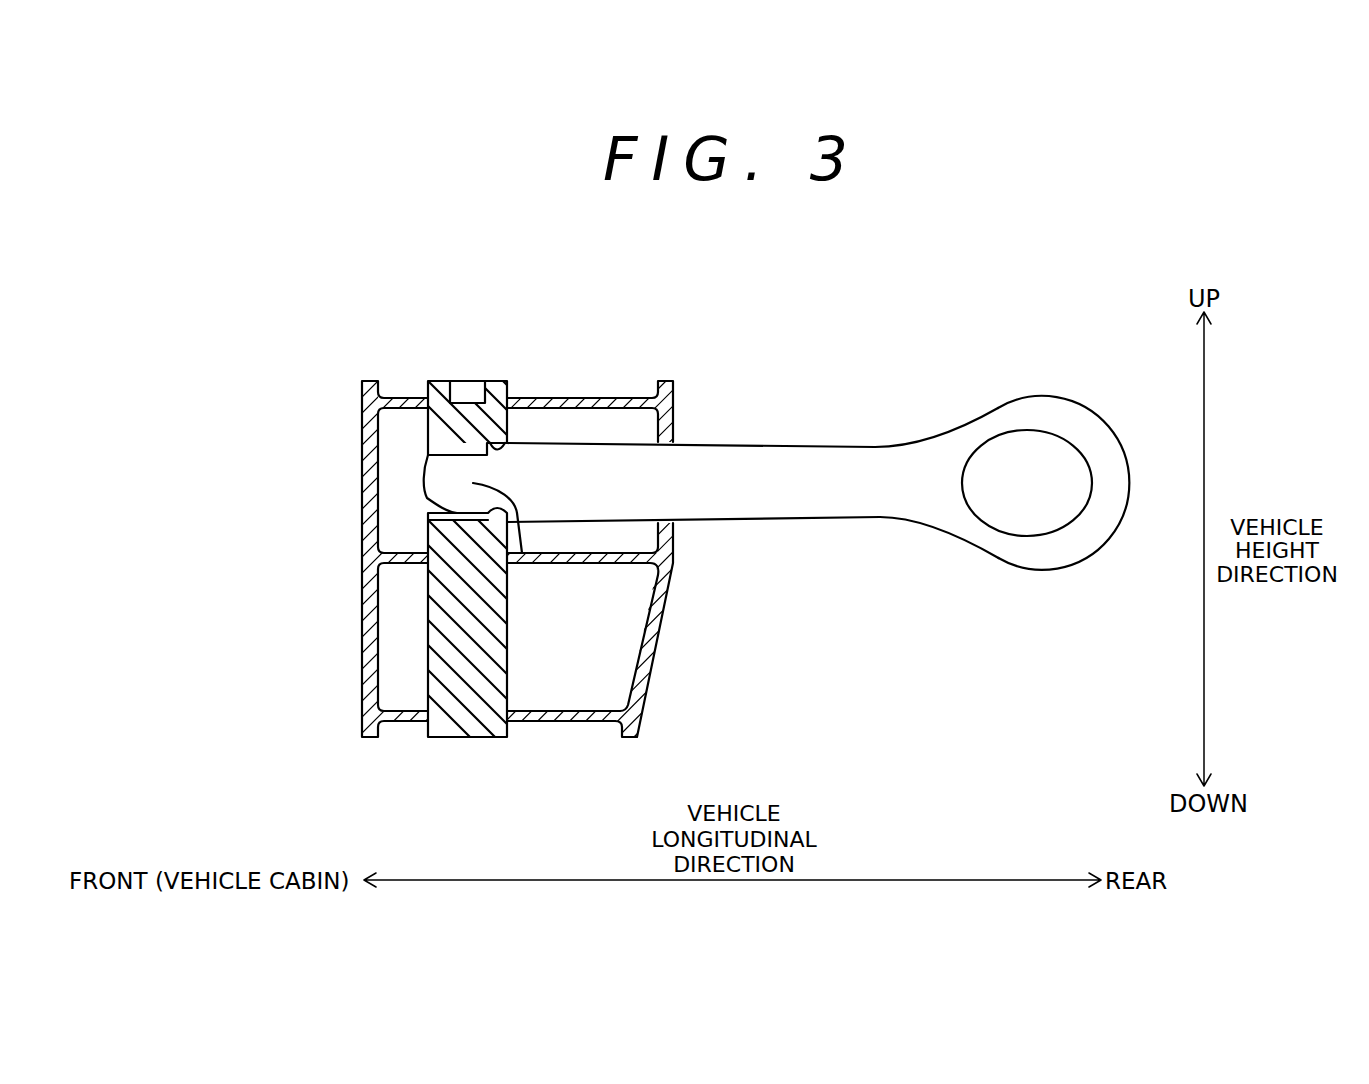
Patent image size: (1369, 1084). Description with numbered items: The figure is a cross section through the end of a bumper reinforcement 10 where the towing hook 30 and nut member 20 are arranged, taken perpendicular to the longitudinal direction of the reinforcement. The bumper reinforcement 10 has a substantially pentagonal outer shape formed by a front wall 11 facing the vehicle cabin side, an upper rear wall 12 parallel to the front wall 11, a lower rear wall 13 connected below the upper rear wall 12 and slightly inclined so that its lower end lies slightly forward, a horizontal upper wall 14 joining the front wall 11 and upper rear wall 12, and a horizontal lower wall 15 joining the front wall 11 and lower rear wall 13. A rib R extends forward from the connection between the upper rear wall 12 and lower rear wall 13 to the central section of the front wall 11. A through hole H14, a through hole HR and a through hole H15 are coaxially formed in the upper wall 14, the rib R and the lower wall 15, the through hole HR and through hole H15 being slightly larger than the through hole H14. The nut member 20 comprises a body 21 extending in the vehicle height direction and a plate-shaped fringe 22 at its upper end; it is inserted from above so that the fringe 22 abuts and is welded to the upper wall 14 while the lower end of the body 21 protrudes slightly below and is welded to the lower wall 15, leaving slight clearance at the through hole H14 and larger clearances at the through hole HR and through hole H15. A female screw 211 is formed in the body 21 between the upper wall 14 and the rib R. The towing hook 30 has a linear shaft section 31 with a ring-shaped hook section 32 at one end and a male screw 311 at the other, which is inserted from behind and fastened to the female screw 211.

The bumper reinforcement 10 is at (636, 373).
The front wall 11 is at (362, 470).
The upper rear wall 12 is at (673, 415).
The lower rear wall 13 is at (665, 633).
The upper wall 14 is at (606, 398).
The lower wall 15 is at (577, 723).
The nut member 20 is at (437, 371).
The body 21 is at (507, 636).
The fringe 22 is at (495, 378).
The female screw 211 is at (428, 498).
The towing hook 30 is at (880, 447).
The shaft section 31 is at (803, 442).
The hook section 32 is at (1042, 395).
The male screw 311 is at (527, 563).
The through hole H14 is at (510, 390).
The through hole HR is at (428, 565).
The through hole H15 is at (507, 737).
The rib R is at (626, 567).